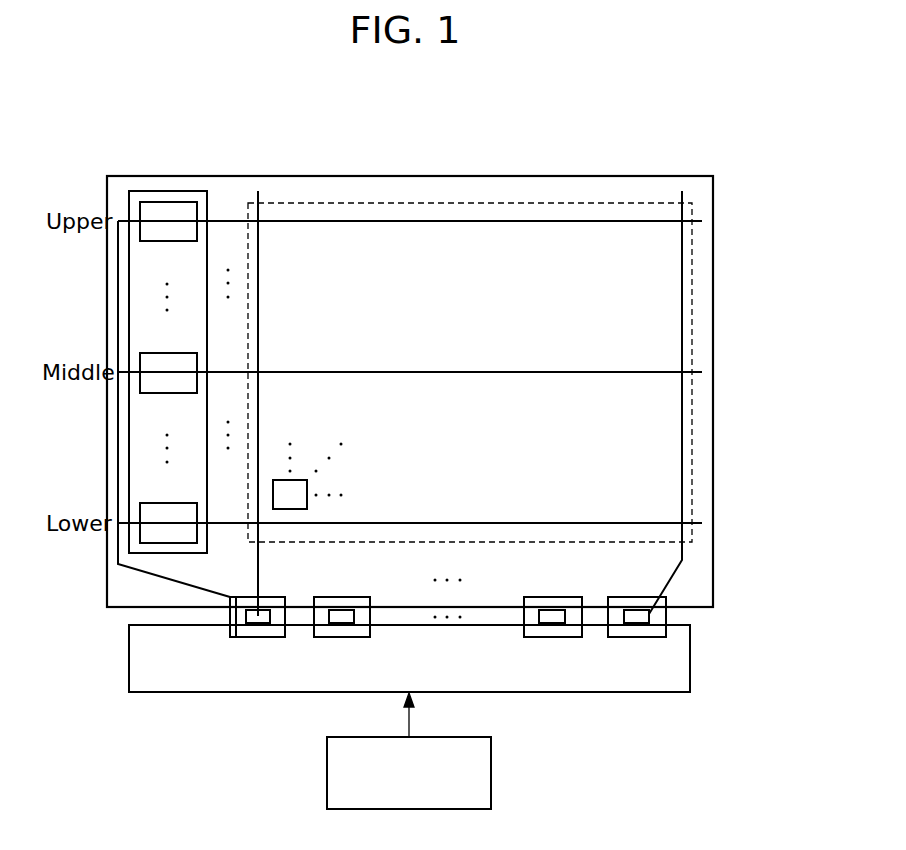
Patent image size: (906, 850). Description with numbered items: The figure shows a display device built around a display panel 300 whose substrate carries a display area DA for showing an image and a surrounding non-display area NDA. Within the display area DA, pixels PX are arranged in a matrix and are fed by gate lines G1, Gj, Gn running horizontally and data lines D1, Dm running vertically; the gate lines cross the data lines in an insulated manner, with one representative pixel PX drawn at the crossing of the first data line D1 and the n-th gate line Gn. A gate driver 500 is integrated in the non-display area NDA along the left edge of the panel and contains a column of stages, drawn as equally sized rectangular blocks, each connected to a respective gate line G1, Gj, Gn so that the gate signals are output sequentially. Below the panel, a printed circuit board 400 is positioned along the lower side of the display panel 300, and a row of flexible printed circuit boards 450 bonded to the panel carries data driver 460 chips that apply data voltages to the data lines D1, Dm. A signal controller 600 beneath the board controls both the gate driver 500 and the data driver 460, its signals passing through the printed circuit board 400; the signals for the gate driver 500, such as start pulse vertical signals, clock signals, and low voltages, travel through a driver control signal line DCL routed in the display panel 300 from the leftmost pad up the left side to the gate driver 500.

The display panel 300 is at (713, 398).
The display area DA is at (692, 288).
The non-display area NDA is at (222, 186).
The gate driver 500 is at (167, 191).
The printed circuit board 400 is at (690, 658).
The flexible printed circuit board 450 is at (623, 637).
The data driver 460 is at (637, 623).
The signal controller 600 is at (491, 773).
The driver control signal line DCL is at (140, 573).
The pixel PX is at (259, 522).
The first data line D1 is at (275, 403).
The m-th data line Dm is at (655, 402).
The first gate line G1 is at (410, 207).
The j-th gate line Gj is at (410, 358).
The n-th gate line Gn is at (410, 509).